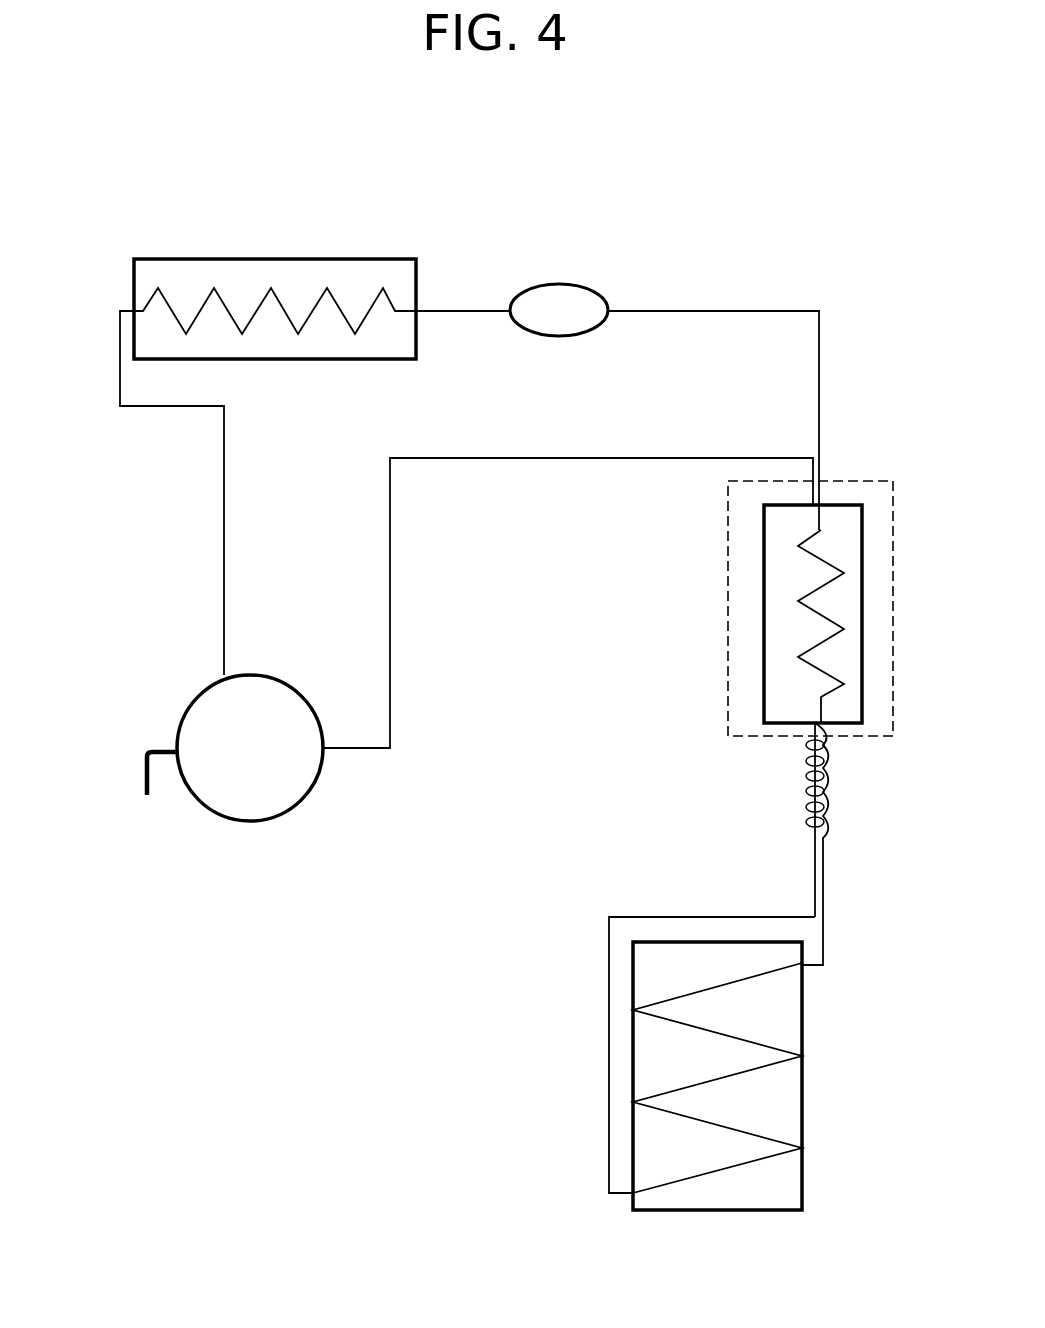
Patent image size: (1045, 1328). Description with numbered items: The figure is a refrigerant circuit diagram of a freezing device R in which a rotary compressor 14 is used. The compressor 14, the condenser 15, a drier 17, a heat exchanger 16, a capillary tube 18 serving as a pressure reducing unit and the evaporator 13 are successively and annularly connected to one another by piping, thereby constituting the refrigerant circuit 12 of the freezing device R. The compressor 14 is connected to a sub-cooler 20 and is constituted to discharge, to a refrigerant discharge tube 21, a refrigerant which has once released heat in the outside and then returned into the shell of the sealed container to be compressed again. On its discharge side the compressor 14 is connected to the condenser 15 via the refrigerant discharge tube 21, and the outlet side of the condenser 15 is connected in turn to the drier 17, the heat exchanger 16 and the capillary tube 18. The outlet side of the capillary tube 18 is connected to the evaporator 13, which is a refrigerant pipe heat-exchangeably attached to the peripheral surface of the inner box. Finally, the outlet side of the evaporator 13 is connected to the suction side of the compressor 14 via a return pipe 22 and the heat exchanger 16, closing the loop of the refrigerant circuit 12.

The freezing device R is at (768, 230).
The refrigerant circuit 12 is at (508, 492).
The evaporator 13 is at (633, 1064).
The compressor 14 is at (257, 808).
The condenser 15 is at (279, 259).
The heat exchanger 16 is at (764, 612).
The drier 17 is at (559, 284).
The capillary tube 18 is at (812, 778).
The sub-cooler 20 is at (141, 787).
The refrigerant discharge tube 21 is at (224, 538).
The return pipe 22 is at (608, 915).